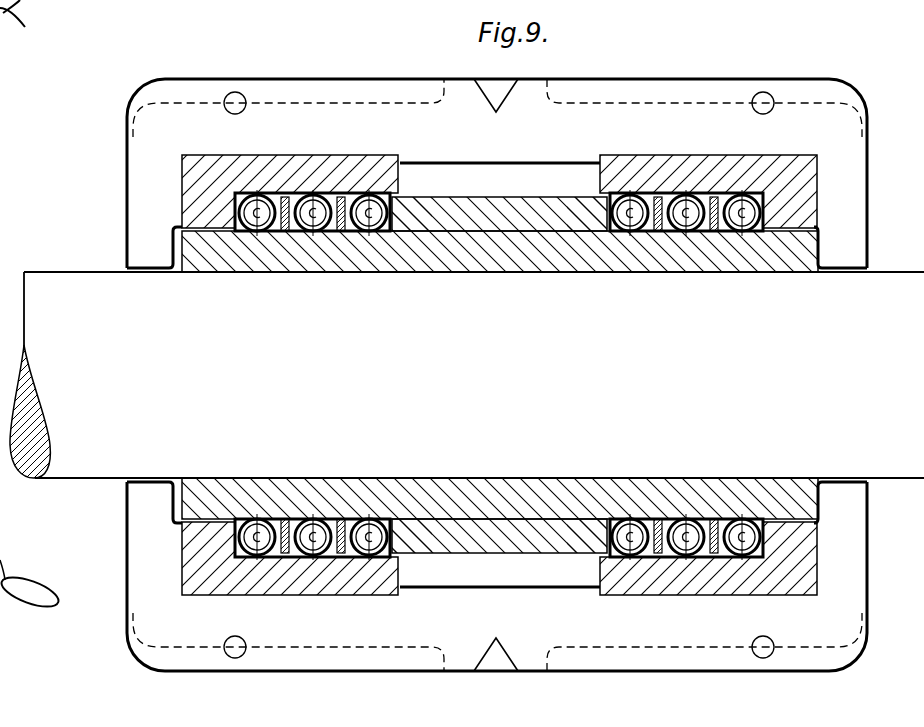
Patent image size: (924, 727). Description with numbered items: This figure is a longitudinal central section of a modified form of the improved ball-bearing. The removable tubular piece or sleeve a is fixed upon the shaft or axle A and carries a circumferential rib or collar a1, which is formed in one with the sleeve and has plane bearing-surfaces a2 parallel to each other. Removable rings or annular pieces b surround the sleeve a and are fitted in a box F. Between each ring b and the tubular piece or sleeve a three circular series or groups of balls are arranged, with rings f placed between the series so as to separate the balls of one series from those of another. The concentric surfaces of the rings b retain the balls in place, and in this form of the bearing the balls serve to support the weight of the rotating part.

The box F is at (497, 375).
The shaft or axle A is at (467, 375).
The removable rings or annular pieces b is at (499, 375).
The removable tubular piece or sleeve a is at (500, 375).
The circumferential projection, rib, or collar a1 is at (499, 375).
The plane bearing-surfaces a2 is at (499, 375).
The rings f is at (714, 197).